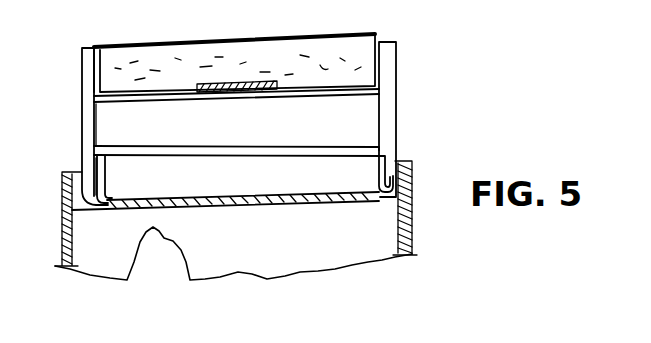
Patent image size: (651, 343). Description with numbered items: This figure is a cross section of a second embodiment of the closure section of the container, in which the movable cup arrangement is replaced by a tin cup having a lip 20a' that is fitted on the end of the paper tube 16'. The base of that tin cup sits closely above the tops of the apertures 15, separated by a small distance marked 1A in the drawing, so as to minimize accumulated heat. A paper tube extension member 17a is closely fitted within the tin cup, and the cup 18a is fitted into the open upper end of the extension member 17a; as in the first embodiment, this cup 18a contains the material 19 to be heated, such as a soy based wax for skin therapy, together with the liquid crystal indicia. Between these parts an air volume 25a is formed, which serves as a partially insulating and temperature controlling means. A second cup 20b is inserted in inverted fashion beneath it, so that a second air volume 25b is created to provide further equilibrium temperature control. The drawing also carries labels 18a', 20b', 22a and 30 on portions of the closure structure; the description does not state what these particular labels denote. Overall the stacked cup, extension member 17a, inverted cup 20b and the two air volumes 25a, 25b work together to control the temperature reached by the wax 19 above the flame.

The apertures 15 is at (175, 258).
The paper tube 16' is at (420, 208).
The paper tube extension member 17a is at (396, 108).
The cup 18a is at (406, 106).
The upright post 18a' is at (108, 110).
The material 19 is at (290, 45).
The lip 20a' is at (54, 206).
The cup 20b is at (243, 159).
The channel member end 20b' is at (110, 211).
The bottom board 22a is at (304, 203).
The air volume 25a is at (275, 134).
The second air volume 25b is at (283, 188).
The fastening strip 30 is at (243, 83).
The detail marker 1A is at (176, 217).